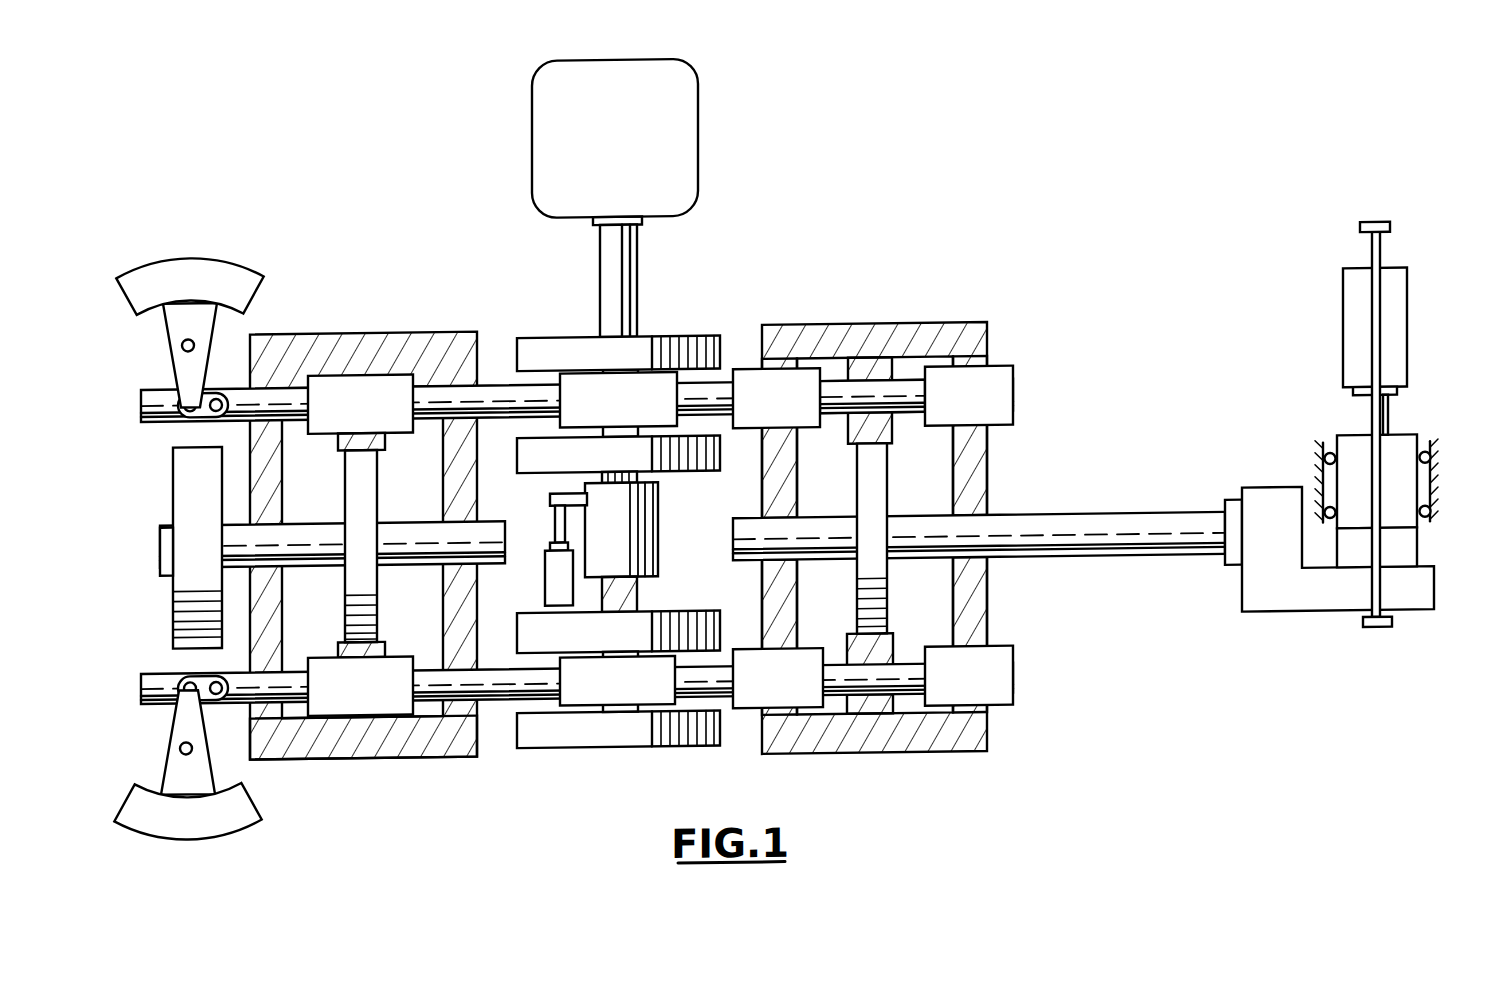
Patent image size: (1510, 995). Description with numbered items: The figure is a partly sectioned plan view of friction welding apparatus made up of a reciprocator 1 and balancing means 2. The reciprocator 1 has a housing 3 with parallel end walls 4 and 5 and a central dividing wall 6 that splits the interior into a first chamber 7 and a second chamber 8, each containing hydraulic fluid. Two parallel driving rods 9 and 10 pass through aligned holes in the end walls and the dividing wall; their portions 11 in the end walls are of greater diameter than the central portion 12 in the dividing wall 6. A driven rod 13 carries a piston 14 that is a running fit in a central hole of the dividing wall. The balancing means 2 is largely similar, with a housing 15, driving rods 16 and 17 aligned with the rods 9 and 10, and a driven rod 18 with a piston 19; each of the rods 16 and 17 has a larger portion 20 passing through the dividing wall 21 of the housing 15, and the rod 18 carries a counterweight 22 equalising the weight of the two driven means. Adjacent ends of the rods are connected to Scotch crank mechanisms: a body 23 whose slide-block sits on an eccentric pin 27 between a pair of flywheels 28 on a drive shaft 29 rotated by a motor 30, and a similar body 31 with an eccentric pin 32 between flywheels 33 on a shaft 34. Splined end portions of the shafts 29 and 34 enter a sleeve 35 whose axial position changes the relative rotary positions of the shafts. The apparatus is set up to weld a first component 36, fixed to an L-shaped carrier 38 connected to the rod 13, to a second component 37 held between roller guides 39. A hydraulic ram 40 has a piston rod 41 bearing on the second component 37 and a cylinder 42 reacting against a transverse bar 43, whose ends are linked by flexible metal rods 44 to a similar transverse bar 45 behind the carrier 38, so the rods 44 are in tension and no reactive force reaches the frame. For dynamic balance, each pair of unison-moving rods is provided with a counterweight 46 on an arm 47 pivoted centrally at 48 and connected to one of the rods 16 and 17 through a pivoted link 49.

The reciprocator 1 is at (794, 462).
The balancing means 2 is at (500, 522).
The housing 3 is at (877, 570).
The end wall 4 is at (785, 598).
The end wall 5 is at (970, 620).
The central dividing wall 6 is at (866, 653).
The first chamber 7 is at (768, 507).
The second chamber 8 is at (920, 475).
The rod 9 is at (840, 395).
The rod 10 is at (850, 672).
The portion 11 is at (760, 387).
The central portion 12 is at (860, 402).
The rod 13 is at (1060, 534).
The piston 14 is at (868, 615).
The housing 15 is at (363, 732).
The rod 16 is at (426, 392).
The rod 17 is at (436, 694).
The rod 18 is at (412, 543).
The piston 19 is at (347, 613).
The portion 20 is at (340, 404).
The dividing wall 21 is at (380, 432).
The counterweight 22 is at (173, 610).
The body 23 is at (578, 391).
The eccentric pin 27 is at (622, 370).
The flywheels 28 is at (530, 450).
The drive shaft 29 is at (622, 257).
The motor 30 is at (662, 110).
The body 31 is at (585, 685).
The eccentric pin 32 is at (617, 710).
The flywheels 33 is at (543, 726).
The shaft 34 is at (637, 594).
The sleeve 35 is at (623, 526).
The first component 36 is at (1400, 554).
The second component 37 is at (1360, 478).
The L-shaped carrier 38 is at (1283, 595).
The roller guides 39 is at (1320, 468).
The hydraulic ram 40 is at (1315, 376).
The piston rod 41 is at (1368, 428).
The cylinder 42 is at (1357, 303).
The transverse bar 43 is at (1373, 230).
The flexible metal rods 44 is at (1375, 263).
The transverse bar 45 is at (1393, 632).
The counterweight 46 is at (212, 275).
The arm 47 is at (190, 313).
The pivot 48 is at (184, 341).
The pivoted link 49 is at (200, 406).